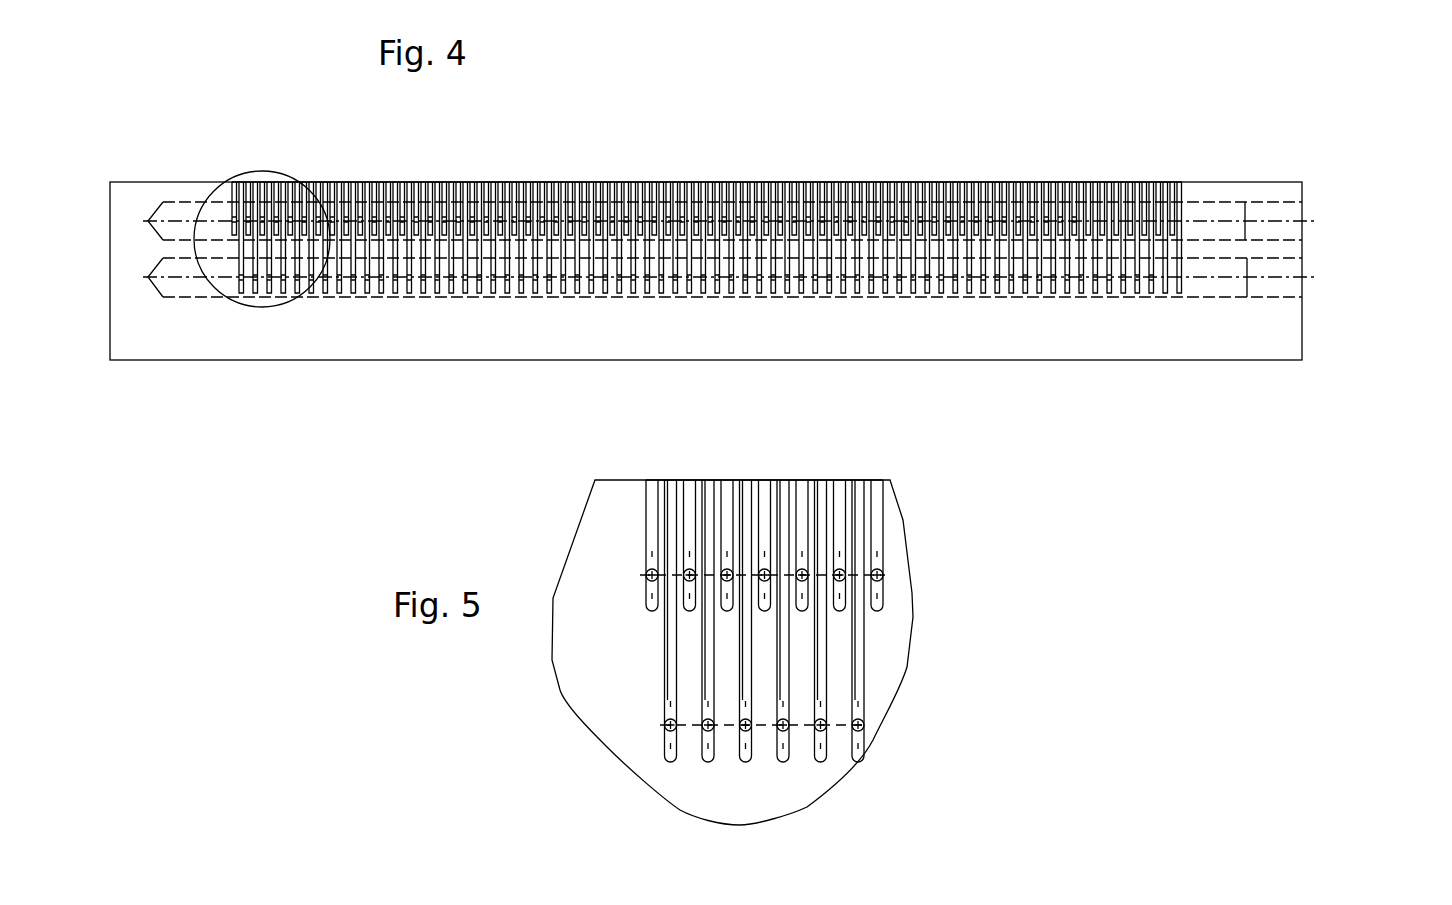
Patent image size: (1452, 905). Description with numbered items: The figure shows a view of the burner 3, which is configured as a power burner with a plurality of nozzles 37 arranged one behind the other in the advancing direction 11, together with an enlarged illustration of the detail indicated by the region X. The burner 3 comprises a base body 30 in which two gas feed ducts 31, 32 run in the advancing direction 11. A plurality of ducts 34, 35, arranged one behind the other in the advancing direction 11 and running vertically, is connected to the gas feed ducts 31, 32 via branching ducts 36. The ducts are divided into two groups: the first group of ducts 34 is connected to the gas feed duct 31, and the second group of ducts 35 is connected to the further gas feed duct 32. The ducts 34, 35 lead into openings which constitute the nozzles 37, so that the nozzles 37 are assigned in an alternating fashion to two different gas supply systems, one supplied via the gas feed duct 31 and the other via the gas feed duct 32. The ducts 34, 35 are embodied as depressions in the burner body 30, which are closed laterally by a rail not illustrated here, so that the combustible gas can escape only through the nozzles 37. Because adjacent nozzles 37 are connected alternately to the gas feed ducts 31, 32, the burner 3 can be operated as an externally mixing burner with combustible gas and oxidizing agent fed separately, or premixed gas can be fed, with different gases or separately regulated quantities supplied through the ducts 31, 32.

In FIG. 4, the burner 3 is at (706, 314).
In FIG. 4, the advancing direction 11 is at (463, 145).
In FIG. 4, the base body 30 is at (390, 354).
In FIG. 5, the base body 30 is at (582, 662).
In FIG. 4, the gas feed duct 31 is at (1295, 213).
In FIG. 4, the gas feed duct 32 is at (1285, 283).
In FIG. 4, the ducts 34 is at (232, 203).
In FIG. 5, the ducts 34 is at (646, 567).
In FIG. 4, the ducts 35 is at (234, 266).
In FIG. 5, the ducts 35 is at (663, 676).
In FIG. 4, the branching ducts 36 is at (234, 217).
In FIG. 5, the branching ducts 36 is at (858, 713).
In FIG. 4, the nozzles 37 is at (243, 180).
In FIG. 5, the nozzles 37 is at (673, 480).
In FIG. 4, the region X is at (285, 170).